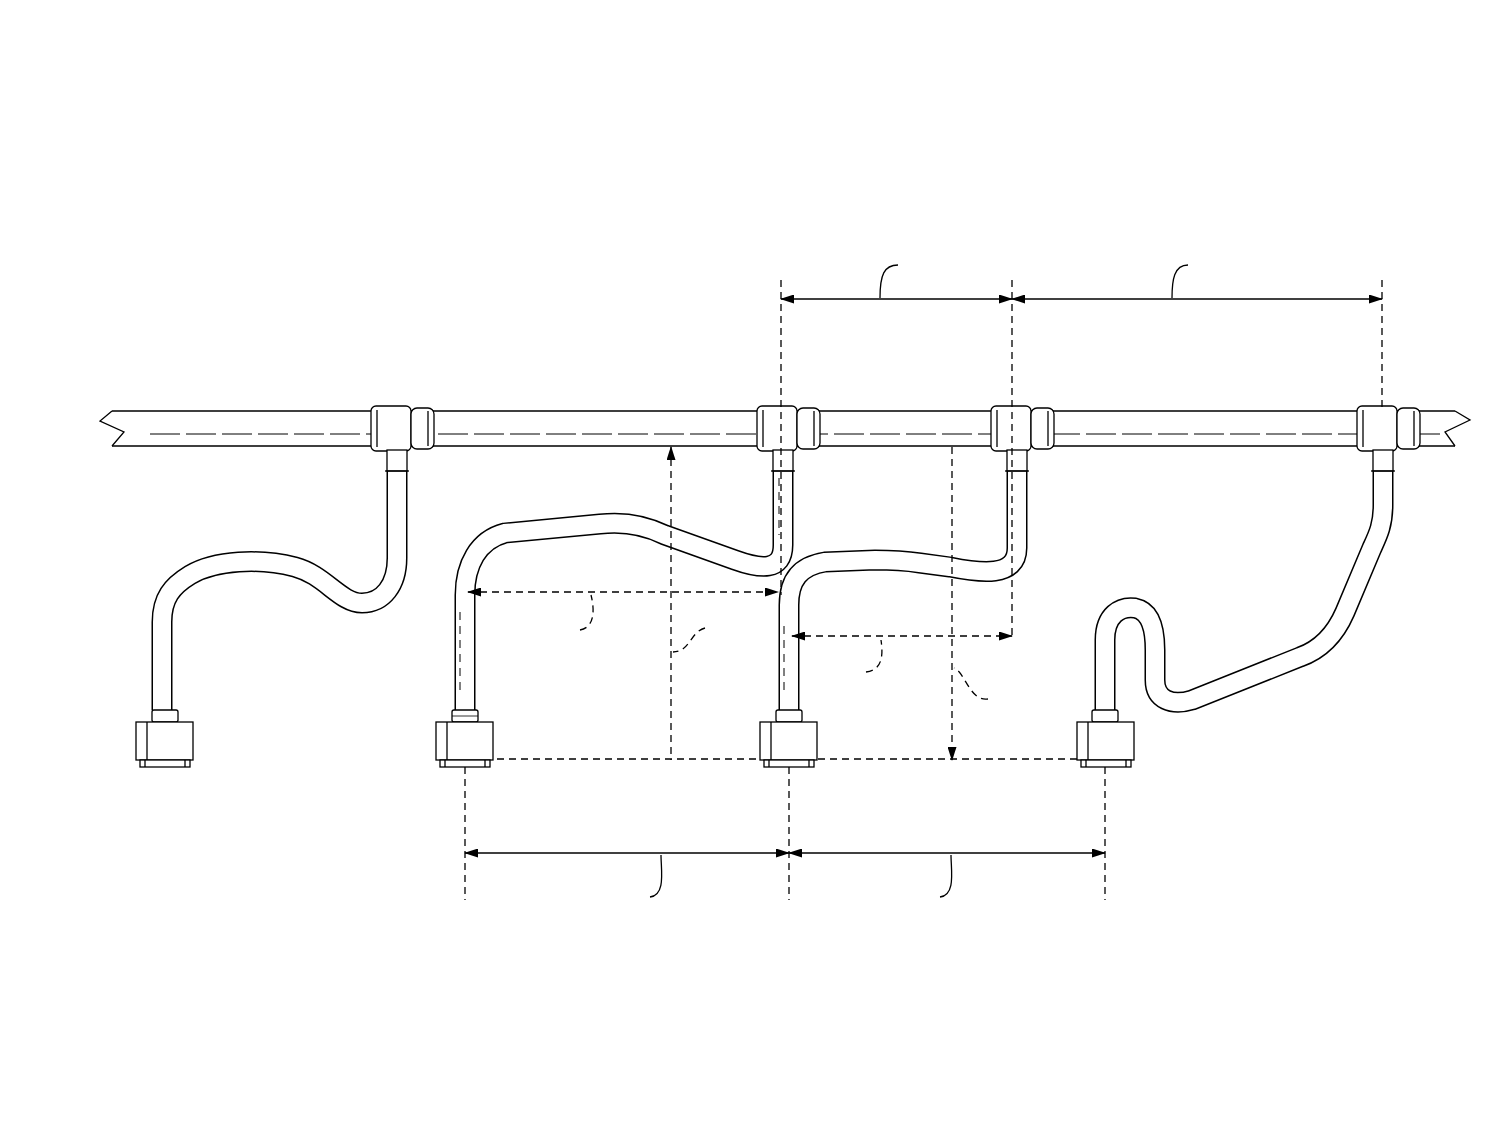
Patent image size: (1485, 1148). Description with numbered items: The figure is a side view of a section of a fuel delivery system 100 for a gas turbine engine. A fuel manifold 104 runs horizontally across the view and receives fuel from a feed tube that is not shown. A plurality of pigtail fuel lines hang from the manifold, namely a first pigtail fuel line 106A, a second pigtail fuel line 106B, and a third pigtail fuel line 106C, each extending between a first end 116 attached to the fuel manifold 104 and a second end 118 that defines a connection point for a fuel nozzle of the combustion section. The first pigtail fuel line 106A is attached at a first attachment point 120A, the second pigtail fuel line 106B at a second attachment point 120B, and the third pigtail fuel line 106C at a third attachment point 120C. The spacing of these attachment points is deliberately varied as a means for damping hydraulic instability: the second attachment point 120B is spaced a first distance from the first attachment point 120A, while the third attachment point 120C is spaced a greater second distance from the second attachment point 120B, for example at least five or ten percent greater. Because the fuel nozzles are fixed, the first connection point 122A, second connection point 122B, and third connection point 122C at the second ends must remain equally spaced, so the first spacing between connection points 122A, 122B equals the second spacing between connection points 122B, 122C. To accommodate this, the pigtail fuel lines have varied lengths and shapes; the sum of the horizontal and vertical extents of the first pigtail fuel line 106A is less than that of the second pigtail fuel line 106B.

The fuel delivery system 100 is at (1302, 160).
The fuel manifold 104 is at (1214, 410).
The first pigtail fuel line 106A is at (545, 527).
The second pigtail fuel line 106B is at (1022, 547).
The third pigtail fuel line 106C is at (1315, 657).
The first end 116 is at (802, 479).
The second end 118 is at (513, 737).
The first attachment point 120A is at (757, 453).
The second attachment point 120B is at (993, 456).
The third attachment point 120C is at (1365, 455).
The first connection point 122A is at (456, 772).
The second connection point 122B is at (781, 772).
The third connection point 122C is at (1097, 772).